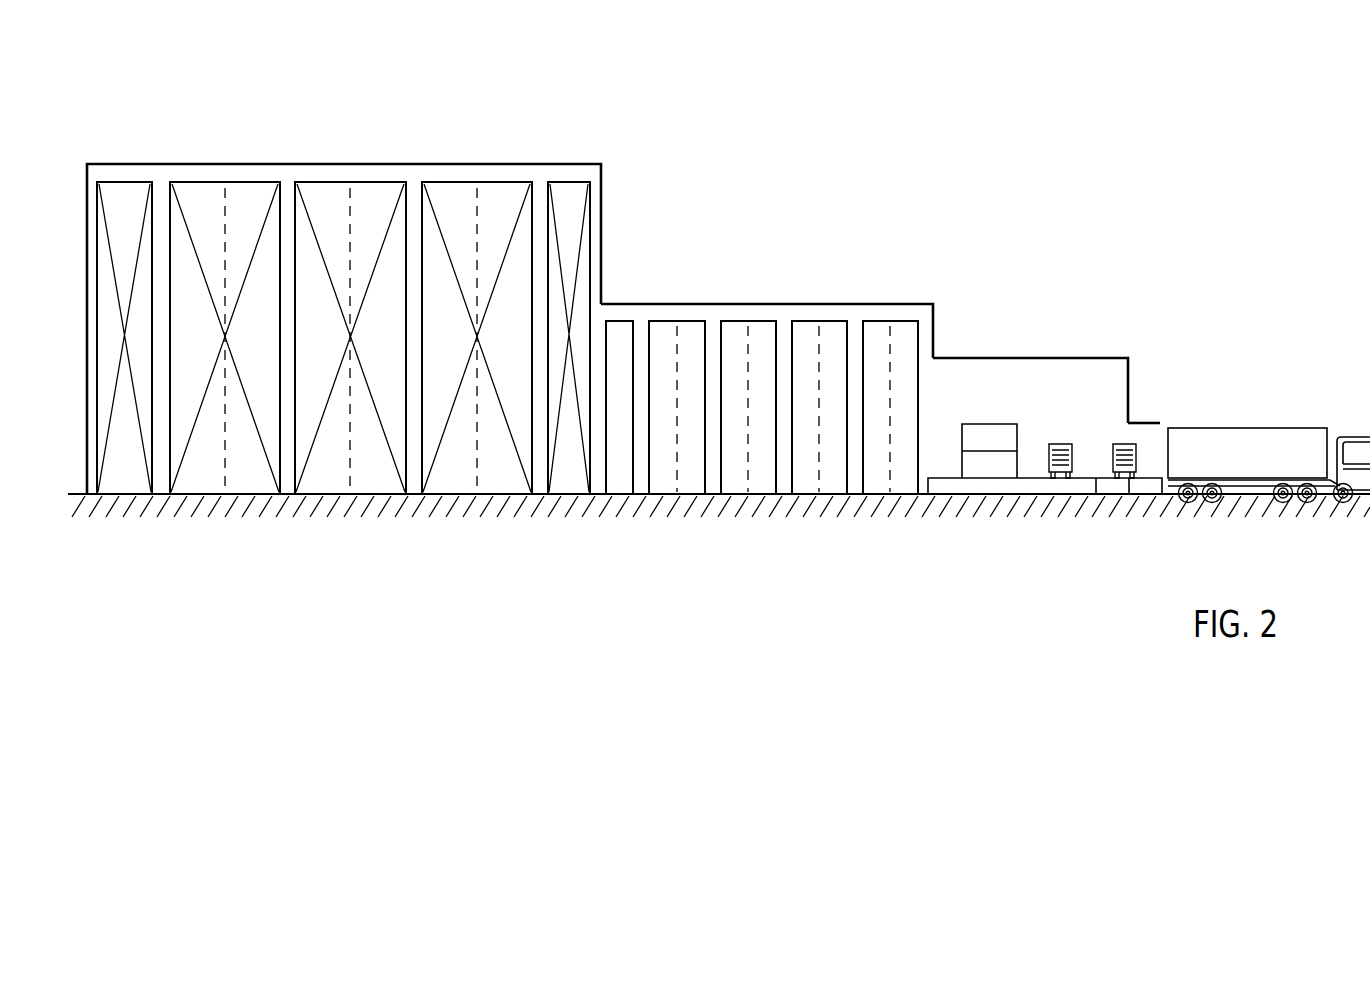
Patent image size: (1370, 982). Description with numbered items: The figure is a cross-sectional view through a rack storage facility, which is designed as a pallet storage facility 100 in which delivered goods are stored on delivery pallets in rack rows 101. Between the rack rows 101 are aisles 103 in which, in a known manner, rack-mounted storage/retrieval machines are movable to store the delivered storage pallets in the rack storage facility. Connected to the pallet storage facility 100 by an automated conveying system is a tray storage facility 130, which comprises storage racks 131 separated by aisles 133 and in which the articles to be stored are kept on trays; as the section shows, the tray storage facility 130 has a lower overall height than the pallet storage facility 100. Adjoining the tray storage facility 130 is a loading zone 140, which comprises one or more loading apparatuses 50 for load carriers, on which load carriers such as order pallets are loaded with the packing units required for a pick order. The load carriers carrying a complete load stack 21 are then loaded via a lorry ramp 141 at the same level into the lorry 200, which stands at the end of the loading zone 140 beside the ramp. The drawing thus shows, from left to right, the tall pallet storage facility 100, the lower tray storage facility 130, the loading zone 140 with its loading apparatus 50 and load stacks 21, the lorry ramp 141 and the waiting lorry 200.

The rack storage facility 100 is at (344, 327).
The rack rows 101 is at (236, 480).
The aisles 103 is at (290, 480).
The tray storage facility 130 is at (767, 402).
The storage racks 131 is at (755, 485).
The aisles 133 is at (715, 485).
The loading zone 140 is at (1056, 371).
The lorry ramp 141 is at (1147, 418).
The loading apparatus 50 is at (990, 470).
The load stack 21 is at (1063, 478).
The lorry 200 is at (1279, 440).